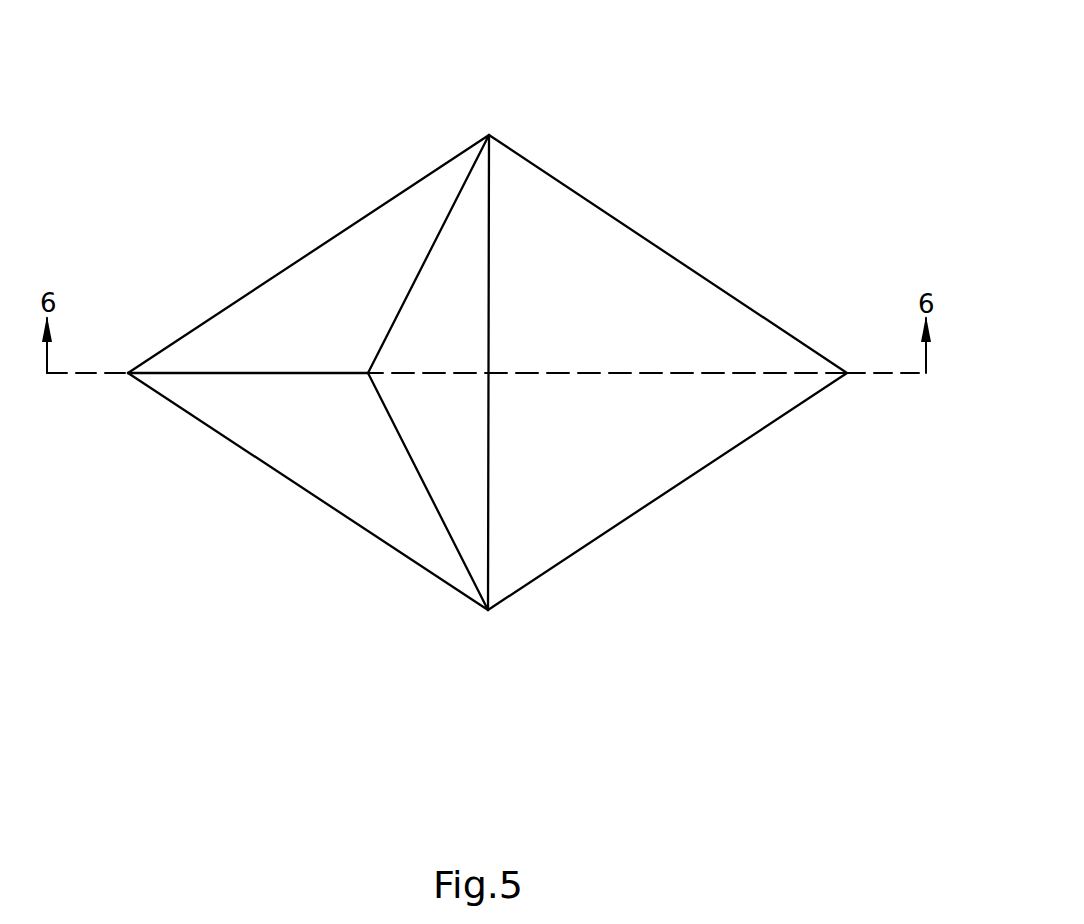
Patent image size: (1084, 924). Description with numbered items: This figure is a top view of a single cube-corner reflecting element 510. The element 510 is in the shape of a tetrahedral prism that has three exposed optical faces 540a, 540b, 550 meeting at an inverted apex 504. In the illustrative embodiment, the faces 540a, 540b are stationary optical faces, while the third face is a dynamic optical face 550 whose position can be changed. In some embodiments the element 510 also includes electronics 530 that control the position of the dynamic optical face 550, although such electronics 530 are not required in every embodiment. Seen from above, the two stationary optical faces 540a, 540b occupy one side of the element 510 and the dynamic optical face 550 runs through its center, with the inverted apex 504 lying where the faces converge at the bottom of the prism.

The cube-corner reflecting element 510 is at (674, 92).
The inverted apex 504 is at (385, 340).
The electronics 530 is at (687, 292).
The stationary optical face 540a is at (235, 415).
The stationary optical face 540b is at (342, 270).
The dynamic optical face 550 is at (467, 235).